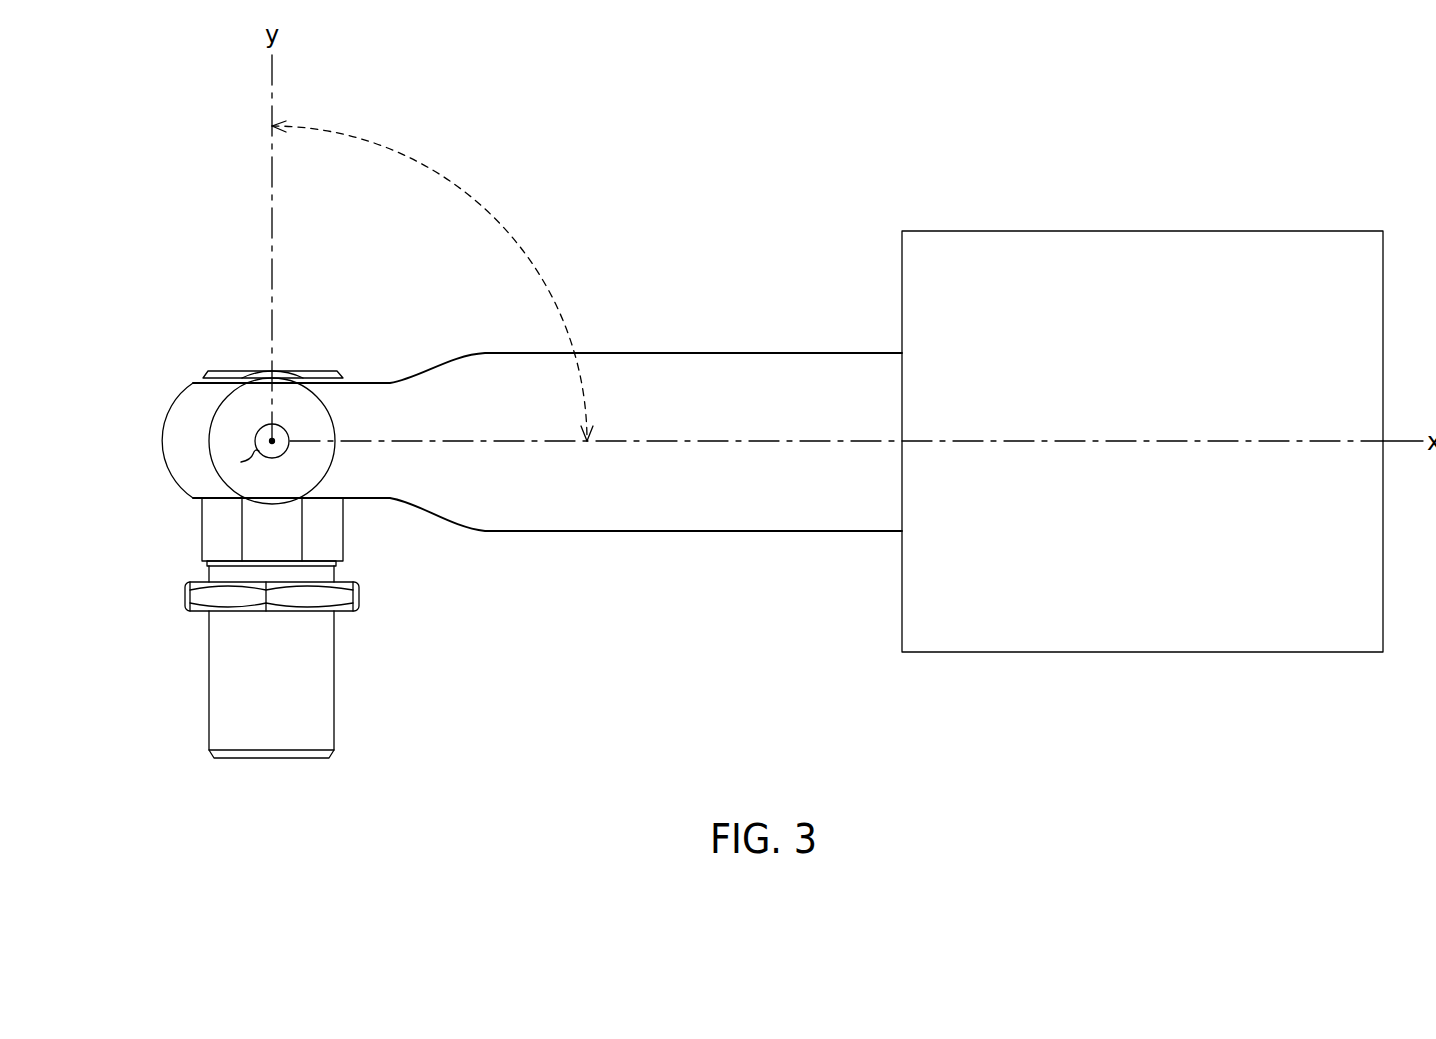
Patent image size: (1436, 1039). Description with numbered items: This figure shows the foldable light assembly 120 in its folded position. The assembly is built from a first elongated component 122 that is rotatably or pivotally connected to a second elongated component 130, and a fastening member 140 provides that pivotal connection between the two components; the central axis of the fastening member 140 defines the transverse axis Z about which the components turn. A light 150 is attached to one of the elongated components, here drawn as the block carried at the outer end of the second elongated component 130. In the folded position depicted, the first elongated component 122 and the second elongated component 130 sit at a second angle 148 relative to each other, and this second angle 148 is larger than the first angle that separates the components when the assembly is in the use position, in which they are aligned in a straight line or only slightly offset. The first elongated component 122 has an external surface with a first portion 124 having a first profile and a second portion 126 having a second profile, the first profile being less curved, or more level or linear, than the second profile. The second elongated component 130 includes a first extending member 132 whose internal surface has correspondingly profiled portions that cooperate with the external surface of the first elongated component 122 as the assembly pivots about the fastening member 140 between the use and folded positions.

The foldable light assembly 120 is at (208, 228).
The first elongated component 122 is at (270, 703).
The first portion 124 is at (275, 525).
The second portion 126 is at (225, 527).
The second elongated component 130 is at (462, 402).
The first extending member 132 is at (180, 450).
The fastening member 140 is at (302, 416).
The second angle 148 is at (452, 181).
The light 150 is at (1110, 292).